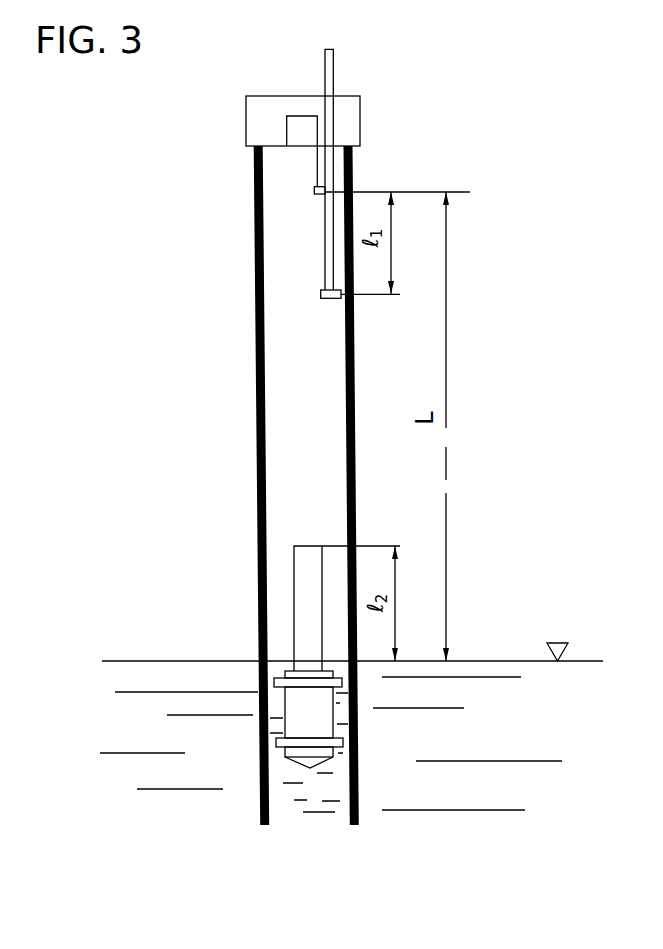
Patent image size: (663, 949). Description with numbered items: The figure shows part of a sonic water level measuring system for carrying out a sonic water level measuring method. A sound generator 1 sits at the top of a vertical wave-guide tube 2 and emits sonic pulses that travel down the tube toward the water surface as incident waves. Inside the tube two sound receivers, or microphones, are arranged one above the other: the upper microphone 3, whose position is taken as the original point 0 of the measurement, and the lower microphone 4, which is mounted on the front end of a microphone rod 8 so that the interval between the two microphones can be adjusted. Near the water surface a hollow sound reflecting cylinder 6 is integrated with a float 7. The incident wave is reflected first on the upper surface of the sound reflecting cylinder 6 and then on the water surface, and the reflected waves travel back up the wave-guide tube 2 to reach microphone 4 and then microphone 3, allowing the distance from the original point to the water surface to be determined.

The original point 0 is at (408, 192).
The sound generator 1 is at (297, 123).
The wave-guide tube 2 is at (253, 165).
The sound receiver (microphone) 3 is at (315, 198).
The sound receiver (microphone) 4 is at (325, 301).
The hollow sound reflecting cylinder 6 is at (303, 556).
The float 7 is at (290, 704).
The microphone rod 8 is at (333, 245).